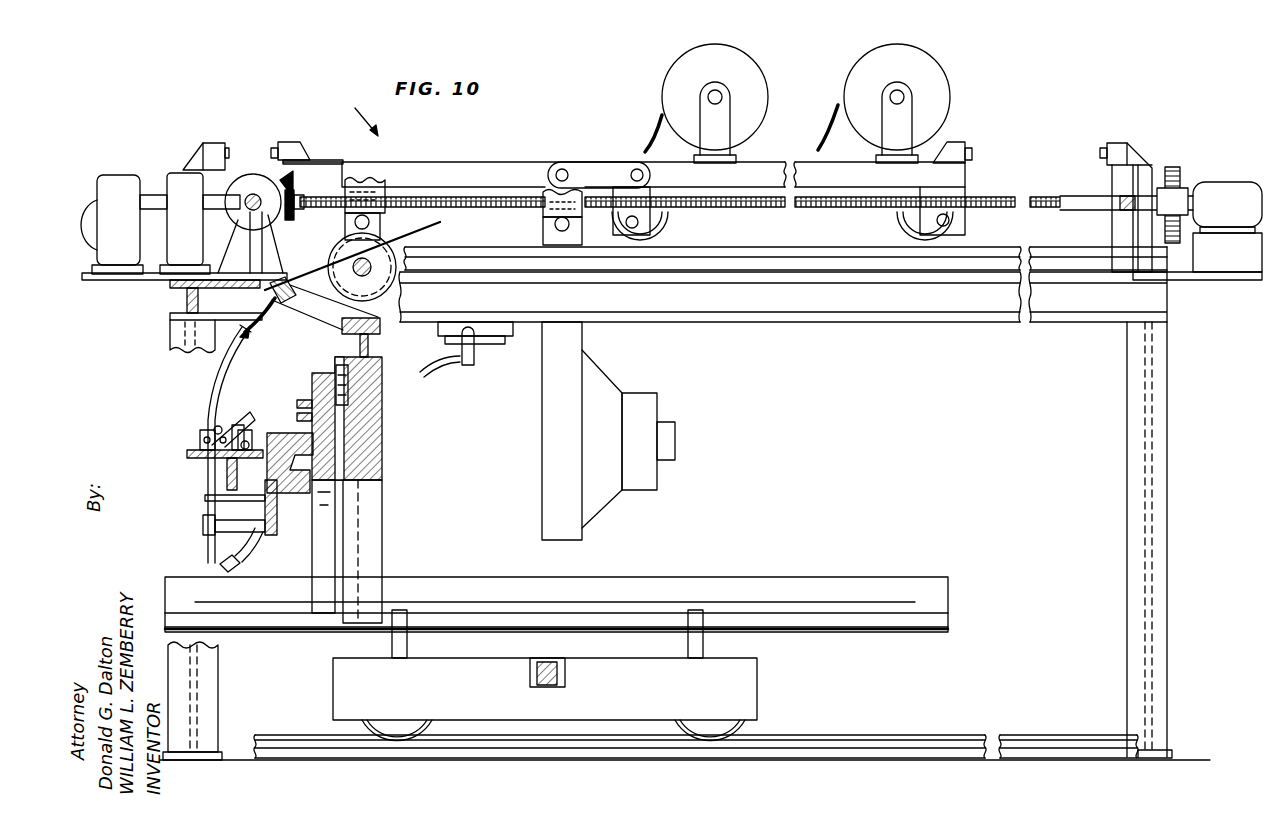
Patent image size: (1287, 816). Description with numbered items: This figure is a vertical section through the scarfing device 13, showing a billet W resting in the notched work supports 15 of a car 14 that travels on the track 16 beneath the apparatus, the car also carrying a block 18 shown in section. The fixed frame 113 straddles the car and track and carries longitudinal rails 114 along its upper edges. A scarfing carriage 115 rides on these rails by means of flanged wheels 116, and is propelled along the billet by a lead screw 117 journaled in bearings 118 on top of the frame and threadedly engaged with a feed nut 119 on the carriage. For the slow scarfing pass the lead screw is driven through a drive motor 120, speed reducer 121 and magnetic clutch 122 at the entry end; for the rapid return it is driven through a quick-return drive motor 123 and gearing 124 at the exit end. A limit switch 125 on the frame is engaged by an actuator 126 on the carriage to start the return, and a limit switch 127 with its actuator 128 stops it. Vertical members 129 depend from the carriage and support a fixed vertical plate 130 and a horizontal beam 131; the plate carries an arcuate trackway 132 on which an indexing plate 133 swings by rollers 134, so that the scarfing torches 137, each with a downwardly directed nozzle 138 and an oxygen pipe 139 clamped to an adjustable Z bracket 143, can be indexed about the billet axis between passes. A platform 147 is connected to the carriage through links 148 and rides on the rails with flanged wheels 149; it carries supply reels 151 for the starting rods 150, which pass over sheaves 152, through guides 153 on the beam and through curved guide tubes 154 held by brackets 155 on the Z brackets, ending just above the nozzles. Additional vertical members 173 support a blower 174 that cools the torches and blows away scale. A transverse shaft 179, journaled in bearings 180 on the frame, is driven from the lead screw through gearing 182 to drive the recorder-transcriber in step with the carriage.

The scarfing device 13 is at (351, 101).
The car 14 is at (350, 688).
The notched work supports 15 is at (408, 640).
The track 16 is at (285, 733).
The carriage bearing block 18 is at (565, 683).
The fixed frame 113 is at (760, 323).
The longitudinal rails 114 is at (776, 256).
The scarfing carriage 115 is at (425, 163).
The flanged wheels 116 is at (405, 233).
The lead screw 117 is at (462, 196).
The bearings 118 is at (1120, 210).
The feed nut 119 is at (548, 188).
The drive motor 120 is at (93, 208).
The speed reducer 121 is at (128, 178).
The magnetic clutch 122 is at (178, 188).
The quick-return drive motor 123 is at (1230, 192).
The gearing 124 is at (1175, 167).
The limit switch 125 is at (212, 143).
The actuator 126 is at (287, 142).
The limit switch 127 is at (1115, 143).
The actuator 128 is at (962, 142).
The vertical members 129 is at (375, 530).
The fixed vertical plate 130 is at (383, 450).
The horizontal beam 131 is at (370, 348).
The arcuate trackway 132 is at (343, 326).
The indexing plate 133 is at (318, 540).
The rollers 134 is at (383, 392).
The scarfing torches 137 is at (250, 558).
The nozzle 138 is at (220, 568).
The oxygen pipe 139 is at (430, 378).
The Z brackets 143 is at (280, 435).
The platform 147 is at (775, 163).
The links 148 is at (592, 168).
The flanged wheels 149 is at (660, 228).
The starting rods 150 is at (185, 541).
The supply reels 151 is at (685, 62).
The sheaves 152 is at (395, 285).
The guides 153 is at (268, 296).
The curved guide tubes 154 is at (208, 383).
The bracket 155 is at (245, 372).
The vertical members 173 is at (542, 446).
The blower 174 is at (650, 478).
The transverse shaft 179 is at (266, 212).
The bearings 180 is at (250, 192).
The gearing 182 is at (290, 184).
The billet W is at (622, 578).